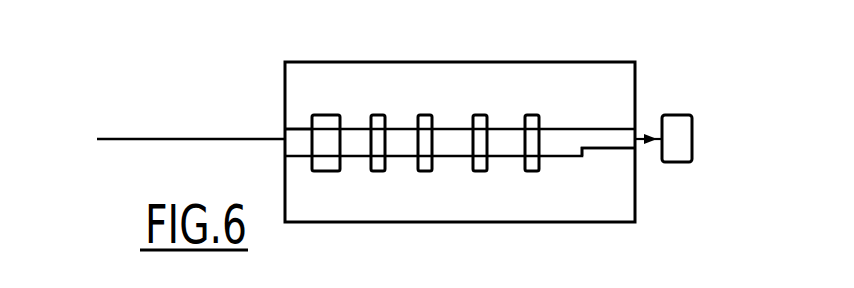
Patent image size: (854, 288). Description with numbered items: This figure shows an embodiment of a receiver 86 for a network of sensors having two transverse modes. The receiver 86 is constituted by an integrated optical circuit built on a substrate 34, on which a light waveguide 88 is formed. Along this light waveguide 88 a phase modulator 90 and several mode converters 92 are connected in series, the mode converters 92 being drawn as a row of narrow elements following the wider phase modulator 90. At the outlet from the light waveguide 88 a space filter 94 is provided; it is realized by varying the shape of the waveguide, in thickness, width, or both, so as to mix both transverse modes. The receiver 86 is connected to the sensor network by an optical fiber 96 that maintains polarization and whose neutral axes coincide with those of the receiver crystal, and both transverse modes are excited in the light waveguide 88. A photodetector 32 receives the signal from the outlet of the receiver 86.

The photodetector 32 is at (686, 143).
The substrate 34 is at (303, 73).
The receiver 86 is at (394, 56).
The light waveguide 88 is at (298, 128).
The phase modulator 90 is at (331, 114).
The mode converters 92 is at (420, 116).
The space filter 94 is at (583, 149).
The optical fiber 96 is at (177, 141).